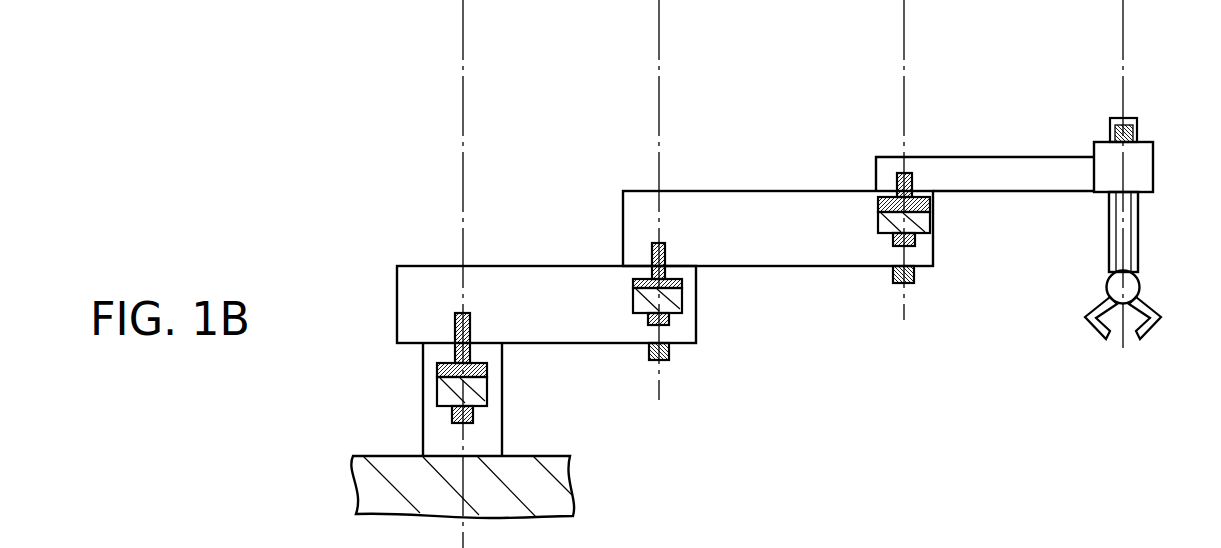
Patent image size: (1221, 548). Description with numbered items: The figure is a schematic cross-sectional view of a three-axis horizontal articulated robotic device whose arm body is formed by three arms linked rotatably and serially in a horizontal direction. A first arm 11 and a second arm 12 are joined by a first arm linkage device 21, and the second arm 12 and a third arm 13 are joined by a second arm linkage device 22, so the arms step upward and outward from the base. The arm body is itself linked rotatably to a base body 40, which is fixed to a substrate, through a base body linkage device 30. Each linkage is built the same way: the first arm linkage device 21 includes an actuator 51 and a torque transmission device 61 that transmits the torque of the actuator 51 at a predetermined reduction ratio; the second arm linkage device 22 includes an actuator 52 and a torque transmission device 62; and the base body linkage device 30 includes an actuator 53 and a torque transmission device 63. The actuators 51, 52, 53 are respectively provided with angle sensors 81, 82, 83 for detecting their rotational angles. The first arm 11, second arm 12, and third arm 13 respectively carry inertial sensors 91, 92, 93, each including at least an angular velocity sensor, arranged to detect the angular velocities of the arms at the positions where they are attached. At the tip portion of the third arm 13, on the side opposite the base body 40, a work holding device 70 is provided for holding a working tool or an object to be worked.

The first arm 11 is at (545, 277).
The second arm 12 is at (772, 200).
The third arm 13 is at (1009, 168).
The first arm linkage device 21 is at (645, 300).
The second arm linkage device 22 is at (891, 226).
The base body linkage device 30 is at (457, 384).
The base body 40 is at (488, 436).
The actuator 51 is at (677, 303).
The actuator 52 is at (923, 222).
The actuator 53 is at (478, 388).
The torque transmission device 61 is at (682, 282).
The torque transmission device 62 is at (932, 203).
The torque transmission device 63 is at (488, 372).
The work holding device 70 is at (1115, 237).
The angle sensor 81 is at (670, 318).
The angle sensor 82 is at (917, 240).
The angle sensor 83 is at (473, 414).
The inertial sensor 91 is at (672, 352).
The inertial sensor 92 is at (915, 273).
The inertial sensor 93 is at (1114, 130).